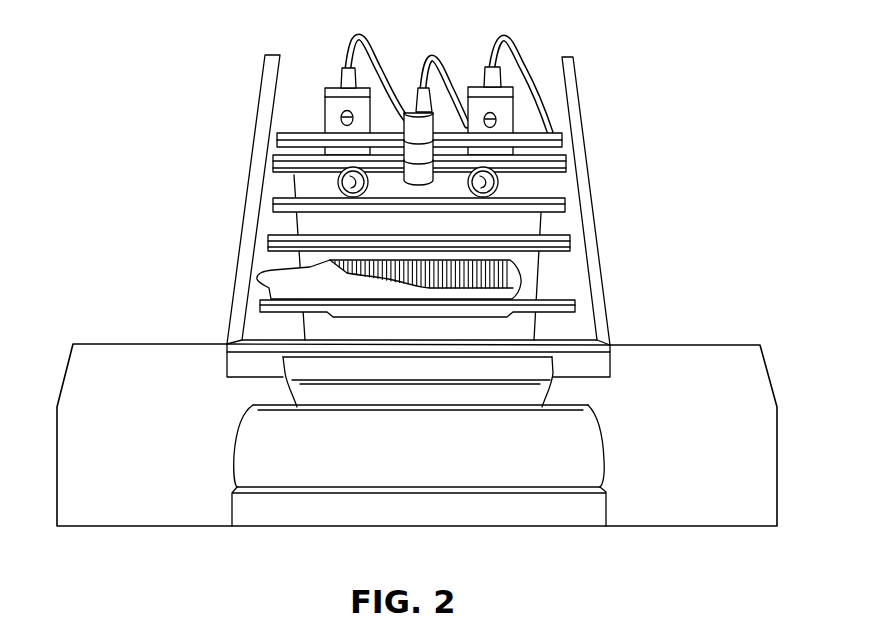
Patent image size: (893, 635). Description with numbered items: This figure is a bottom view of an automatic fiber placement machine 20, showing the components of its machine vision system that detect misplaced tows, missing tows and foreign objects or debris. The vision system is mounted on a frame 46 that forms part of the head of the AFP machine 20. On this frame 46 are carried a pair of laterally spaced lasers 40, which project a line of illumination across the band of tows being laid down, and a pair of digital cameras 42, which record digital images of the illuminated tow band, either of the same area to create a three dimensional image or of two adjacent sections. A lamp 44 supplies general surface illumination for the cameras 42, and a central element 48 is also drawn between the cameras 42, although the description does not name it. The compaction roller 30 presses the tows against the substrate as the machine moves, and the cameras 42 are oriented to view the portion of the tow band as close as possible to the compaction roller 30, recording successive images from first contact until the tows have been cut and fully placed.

The automatic fiber placement (AFP) machine 20 is at (168, 111).
The compaction roller 30 is at (260, 455).
The laser 40 is at (340, 103).
The digital camera 42 is at (340, 182).
The lamp 44 is at (500, 273).
The frame 46 is at (577, 145).
The central probe 48 is at (418, 143).